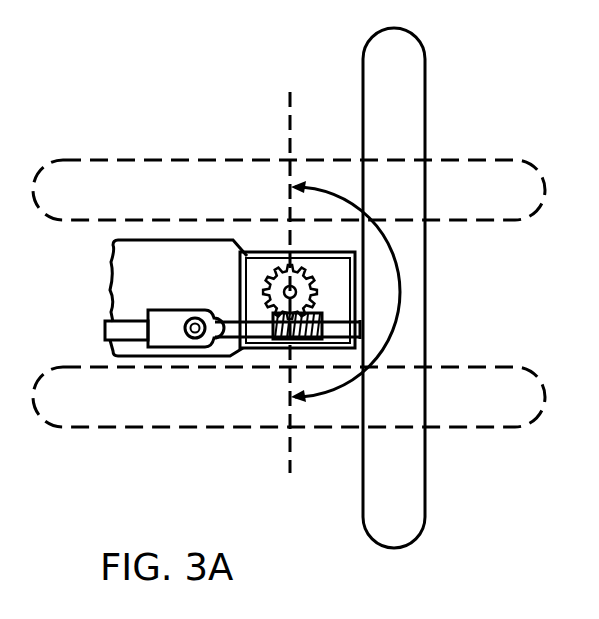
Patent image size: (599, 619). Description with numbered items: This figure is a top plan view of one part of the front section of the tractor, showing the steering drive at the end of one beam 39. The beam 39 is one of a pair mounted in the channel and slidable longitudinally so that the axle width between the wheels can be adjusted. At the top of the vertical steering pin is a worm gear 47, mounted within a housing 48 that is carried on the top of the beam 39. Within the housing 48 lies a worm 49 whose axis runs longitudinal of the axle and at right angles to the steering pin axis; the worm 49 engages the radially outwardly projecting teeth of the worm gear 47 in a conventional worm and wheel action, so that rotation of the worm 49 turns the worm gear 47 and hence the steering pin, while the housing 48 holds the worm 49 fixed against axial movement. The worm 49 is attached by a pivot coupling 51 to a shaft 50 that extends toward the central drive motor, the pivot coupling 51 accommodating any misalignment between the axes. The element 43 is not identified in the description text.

The beam 39 is at (128, 266).
The support bar 43 is at (412, 83).
The worm gear 47 is at (252, 276).
The housing 48 is at (273, 252).
The worm 49 is at (268, 345).
The shaft 50 is at (110, 322).
The pivot coupling 51 is at (207, 311).